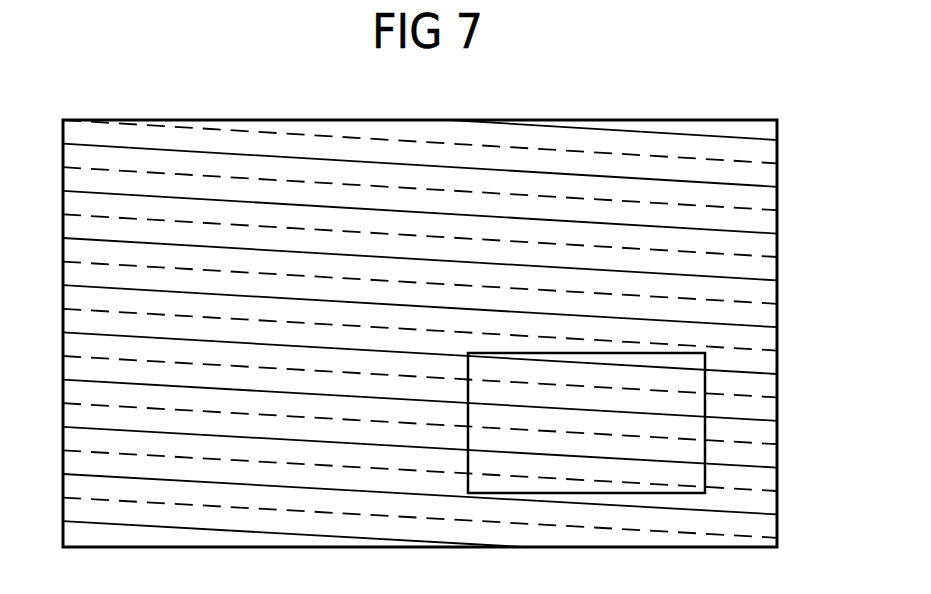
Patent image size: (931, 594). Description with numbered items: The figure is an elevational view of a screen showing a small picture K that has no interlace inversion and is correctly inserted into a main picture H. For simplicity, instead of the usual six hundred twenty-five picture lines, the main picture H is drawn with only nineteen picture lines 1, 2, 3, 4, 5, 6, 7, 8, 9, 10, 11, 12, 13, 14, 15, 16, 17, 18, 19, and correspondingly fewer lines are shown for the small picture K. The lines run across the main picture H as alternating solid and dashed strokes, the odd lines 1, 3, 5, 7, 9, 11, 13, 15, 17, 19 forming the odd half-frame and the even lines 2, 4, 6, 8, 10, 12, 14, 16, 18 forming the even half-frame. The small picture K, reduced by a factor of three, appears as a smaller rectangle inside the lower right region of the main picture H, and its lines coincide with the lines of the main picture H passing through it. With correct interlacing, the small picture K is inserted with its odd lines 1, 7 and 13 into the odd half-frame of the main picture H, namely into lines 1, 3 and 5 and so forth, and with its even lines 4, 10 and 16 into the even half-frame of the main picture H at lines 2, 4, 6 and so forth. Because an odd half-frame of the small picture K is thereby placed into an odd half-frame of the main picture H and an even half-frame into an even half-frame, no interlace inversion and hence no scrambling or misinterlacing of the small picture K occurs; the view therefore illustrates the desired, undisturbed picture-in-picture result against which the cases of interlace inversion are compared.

The main picture H is at (302, 120).
The small picture K is at (466, 484).
The picture line 1 is at (673, 365).
The picture line 2 is at (442, 150).
The picture line 3 is at (433, 174).
The picture line 4 is at (647, 390).
The picture line 5 is at (433, 224).
The picture line 6 is at (442, 246).
The picture line 7 is at (696, 550).
The picture line 8 is at (442, 294).
The picture line 9 is at (432, 316).
The picture line 10 is at (644, 552).
The picture line 11 is at (436, 362).
The picture line 12 is at (447, 387).
The picture line 13 is at (734, 550).
The picture line 14 is at (448, 434).
The picture line 15 is at (436, 456).
The picture line 16 is at (609, 552).
The picture line 17 is at (437, 504).
The picture line 18 is at (402, 507).
The picture line 19 is at (275, 526).